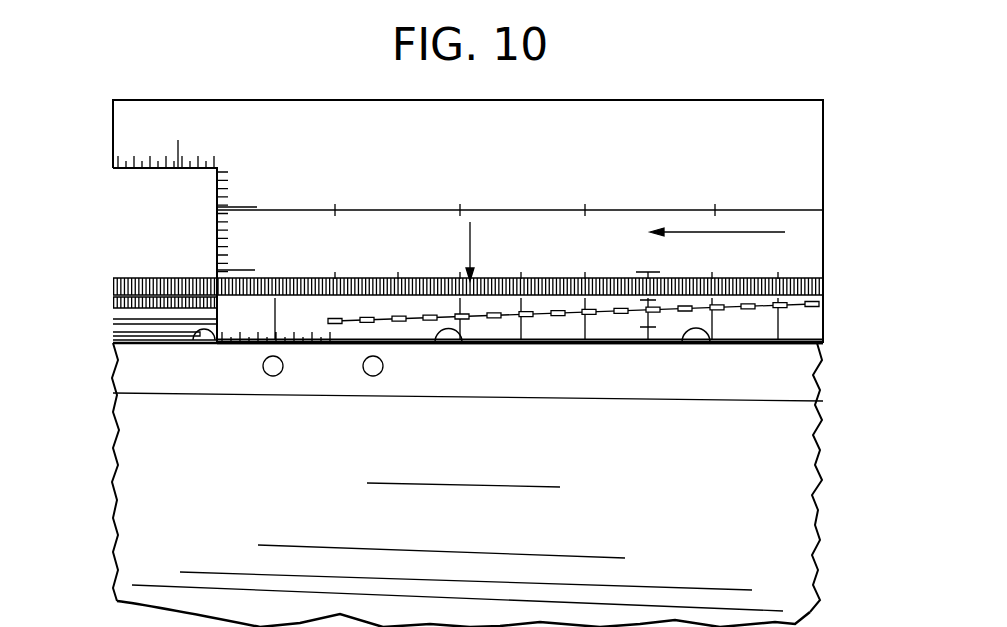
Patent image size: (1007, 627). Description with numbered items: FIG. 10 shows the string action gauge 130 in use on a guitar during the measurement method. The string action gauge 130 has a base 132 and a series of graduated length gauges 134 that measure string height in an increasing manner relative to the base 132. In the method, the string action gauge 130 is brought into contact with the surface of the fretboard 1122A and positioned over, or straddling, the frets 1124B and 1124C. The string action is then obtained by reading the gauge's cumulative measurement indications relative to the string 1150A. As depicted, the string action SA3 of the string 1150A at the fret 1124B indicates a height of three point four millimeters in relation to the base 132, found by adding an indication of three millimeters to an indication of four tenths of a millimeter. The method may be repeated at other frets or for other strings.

The string action gauge 130 is at (363, 262).
The string 1150A is at (805, 286).
The graduated length gauges 134 is at (810, 308).
The base 132 is at (800, 343).
The fretboard 1122A is at (160, 362).
The fret 1124B is at (450, 343).
The fret 1124C is at (695, 343).
The string action SA3 is at (468, 343).